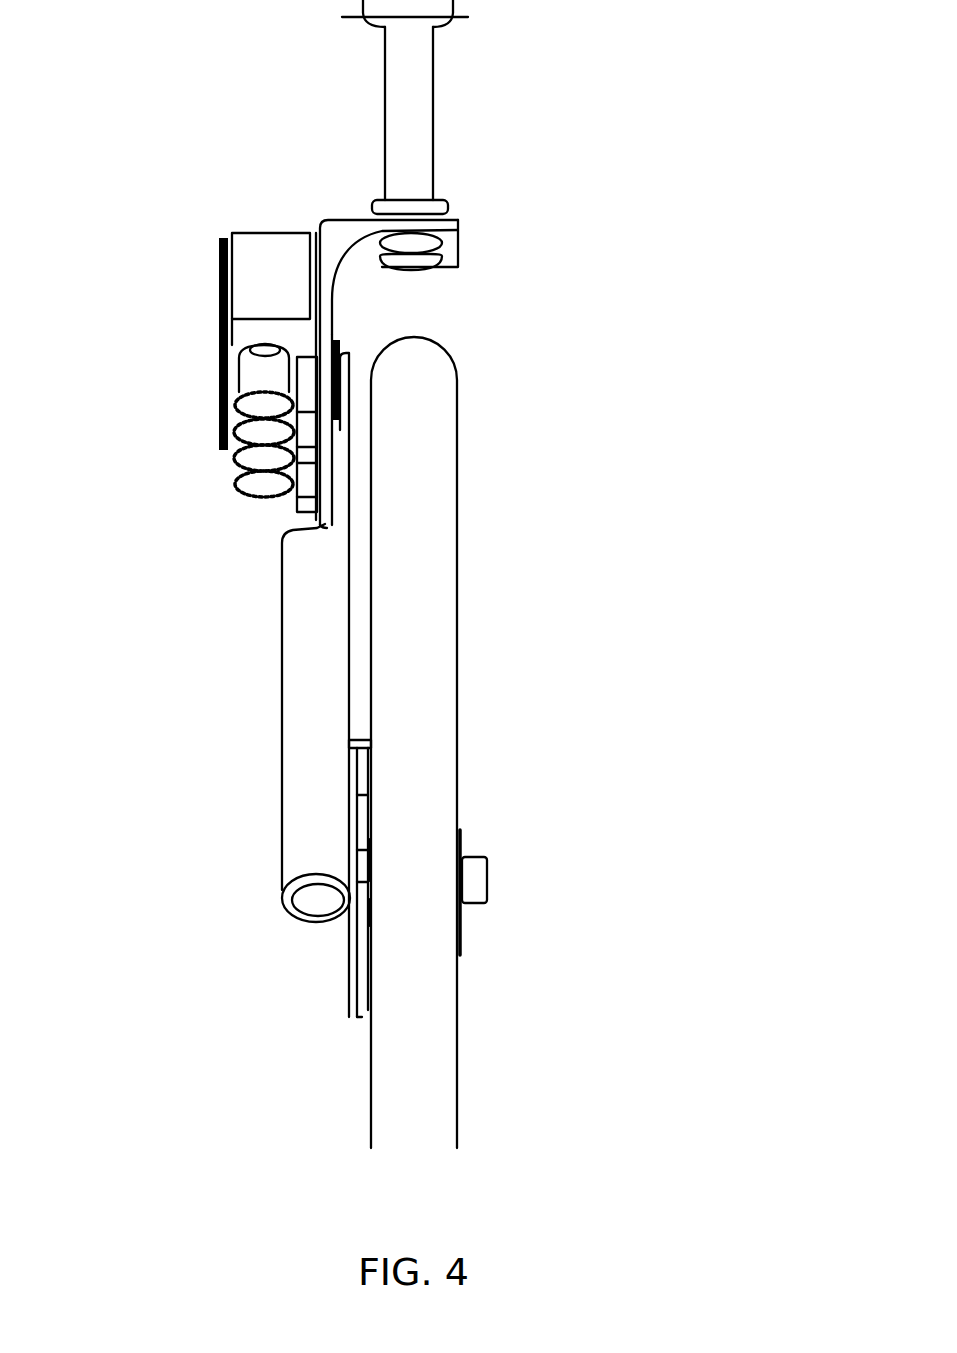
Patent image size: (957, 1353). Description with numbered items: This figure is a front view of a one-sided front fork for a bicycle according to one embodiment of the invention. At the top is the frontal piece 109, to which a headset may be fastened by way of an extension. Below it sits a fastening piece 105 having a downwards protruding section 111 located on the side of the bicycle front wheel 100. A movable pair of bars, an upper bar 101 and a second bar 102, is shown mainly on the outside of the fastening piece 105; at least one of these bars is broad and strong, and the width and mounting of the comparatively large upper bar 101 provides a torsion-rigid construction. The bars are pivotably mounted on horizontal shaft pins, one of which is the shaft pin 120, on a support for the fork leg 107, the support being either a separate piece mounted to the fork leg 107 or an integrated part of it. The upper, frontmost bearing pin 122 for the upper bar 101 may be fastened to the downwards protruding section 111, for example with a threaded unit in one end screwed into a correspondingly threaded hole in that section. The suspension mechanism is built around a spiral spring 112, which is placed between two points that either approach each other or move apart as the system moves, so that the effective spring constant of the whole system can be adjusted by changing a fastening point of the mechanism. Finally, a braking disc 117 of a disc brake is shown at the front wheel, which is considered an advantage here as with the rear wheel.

The bicycle front wheel 100 is at (422, 740).
The upper bar 101 is at (263, 330).
The bar 102 is at (305, 432).
The fastening piece 105 is at (347, 228).
The fork leg 107 is at (312, 667).
The frontal piece 109 is at (417, 118).
The downwards protruding section 111 is at (333, 335).
The spiral spring 112 is at (226, 460).
The braking disc 117 is at (347, 952).
The horizontal shaft pin 120 is at (221, 408).
The upper frontmost bearing pin 122 is at (219, 262).